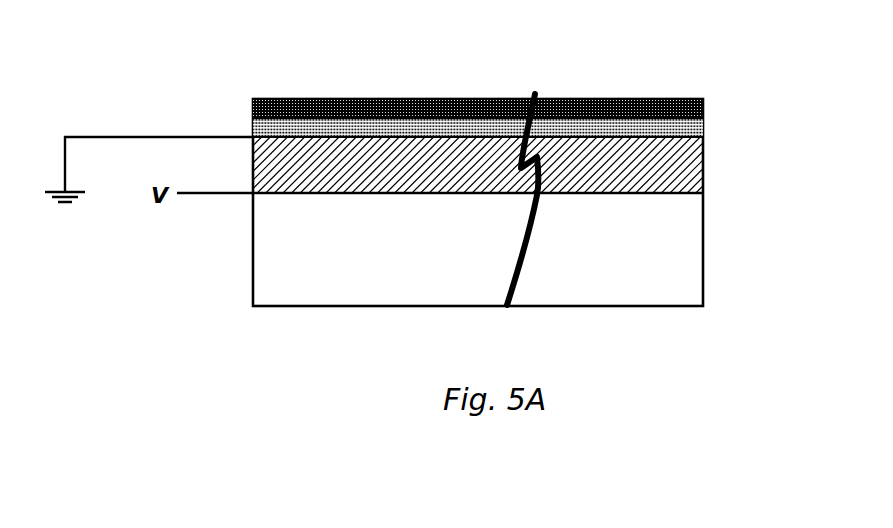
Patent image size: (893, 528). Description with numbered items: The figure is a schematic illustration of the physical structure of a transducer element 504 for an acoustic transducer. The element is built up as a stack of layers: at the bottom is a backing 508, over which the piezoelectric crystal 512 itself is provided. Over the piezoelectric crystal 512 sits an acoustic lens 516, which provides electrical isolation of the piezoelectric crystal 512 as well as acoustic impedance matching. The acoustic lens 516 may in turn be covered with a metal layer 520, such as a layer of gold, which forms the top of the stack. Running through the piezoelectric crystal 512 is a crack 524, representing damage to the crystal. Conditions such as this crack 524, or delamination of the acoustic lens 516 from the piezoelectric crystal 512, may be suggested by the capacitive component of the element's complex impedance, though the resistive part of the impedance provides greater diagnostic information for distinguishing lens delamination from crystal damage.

The transducer element 504 is at (176, 258).
The backing 508 is at (705, 278).
The piezoelectric crystal 512 is at (705, 186).
The acoustic lens 516 is at (705, 129).
The metal layer 520 is at (705, 109).
The crack 524 is at (516, 283).